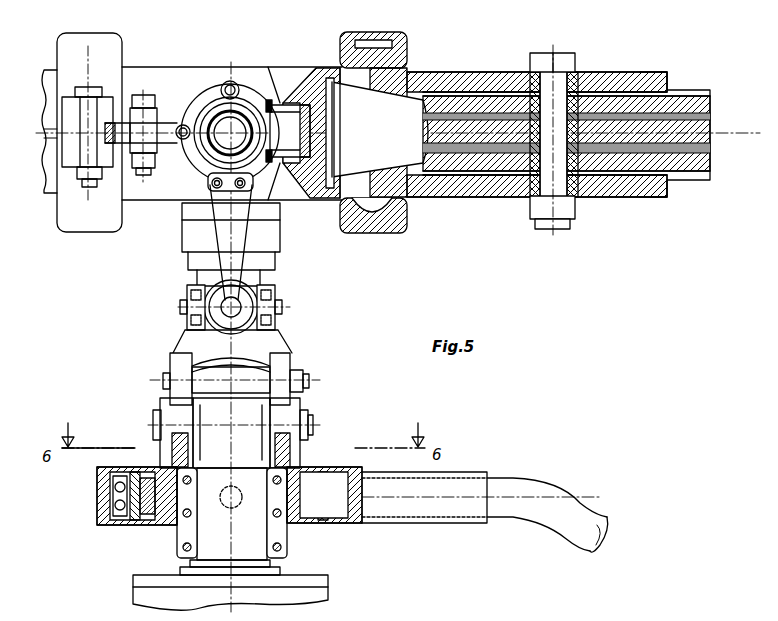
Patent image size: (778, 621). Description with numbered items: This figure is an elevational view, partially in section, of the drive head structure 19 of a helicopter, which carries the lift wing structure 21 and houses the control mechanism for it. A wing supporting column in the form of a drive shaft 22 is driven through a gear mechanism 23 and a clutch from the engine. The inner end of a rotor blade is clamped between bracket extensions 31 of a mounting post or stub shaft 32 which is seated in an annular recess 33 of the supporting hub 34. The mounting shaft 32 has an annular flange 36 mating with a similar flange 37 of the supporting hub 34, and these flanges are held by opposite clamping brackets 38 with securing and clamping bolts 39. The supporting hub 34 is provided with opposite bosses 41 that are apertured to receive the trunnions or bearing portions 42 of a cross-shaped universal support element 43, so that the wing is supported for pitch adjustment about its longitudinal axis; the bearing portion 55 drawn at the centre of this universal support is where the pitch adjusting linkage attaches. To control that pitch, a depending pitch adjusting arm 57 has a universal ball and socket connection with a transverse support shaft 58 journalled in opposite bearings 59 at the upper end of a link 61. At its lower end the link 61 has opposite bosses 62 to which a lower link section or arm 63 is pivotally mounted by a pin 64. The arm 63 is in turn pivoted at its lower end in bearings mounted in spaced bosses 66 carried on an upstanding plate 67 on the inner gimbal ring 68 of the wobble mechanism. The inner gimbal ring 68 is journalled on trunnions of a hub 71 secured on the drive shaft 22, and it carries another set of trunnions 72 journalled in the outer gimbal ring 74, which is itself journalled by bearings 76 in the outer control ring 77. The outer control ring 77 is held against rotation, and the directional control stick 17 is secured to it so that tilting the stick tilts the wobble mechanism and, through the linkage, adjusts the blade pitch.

The directional control stick 17 is at (572, 503).
The drive head structure 19 is at (196, 60).
The lift wing structure 21 is at (692, 85).
The drive shaft 22 is at (262, 278).
The gear mechanism 23 is at (328, 605).
The bracket extensions 31 is at (632, 75).
The mounting post 32 is at (452, 72).
The annular recess 33 is at (348, 92).
The supporting hub 34 is at (322, 70).
The annular flange 36 is at (407, 52).
The flange 37 is at (348, 32).
The clamping brackets 38 is at (118, 52).
The clamping bolts 39 is at (83, 90).
The bosses 41 is at (294, 80).
The trunnions 42 is at (286, 108).
The universal support element 43 is at (270, 88).
The bearing 55 is at (212, 150).
The pitch adjusting arm 57 is at (225, 232).
The transverse support shaft 58 is at (187, 304).
The bearings 59 is at (191, 321).
The link 61 is at (178, 346).
The bosses 62 is at (170, 365).
The lower link section 63 is at (222, 400).
The pin 64 is at (308, 381).
The spaced bosses 66 is at (160, 407).
The upstanding plate 67 is at (172, 445).
The inner gimbal ring 68 is at (288, 540).
The hub 71 is at (180, 540).
The trunnions 72 is at (148, 522).
The outer gimbal ring 74 is at (133, 522).
The bearings 76 is at (110, 505).
The outer control ring 77 is at (103, 490).